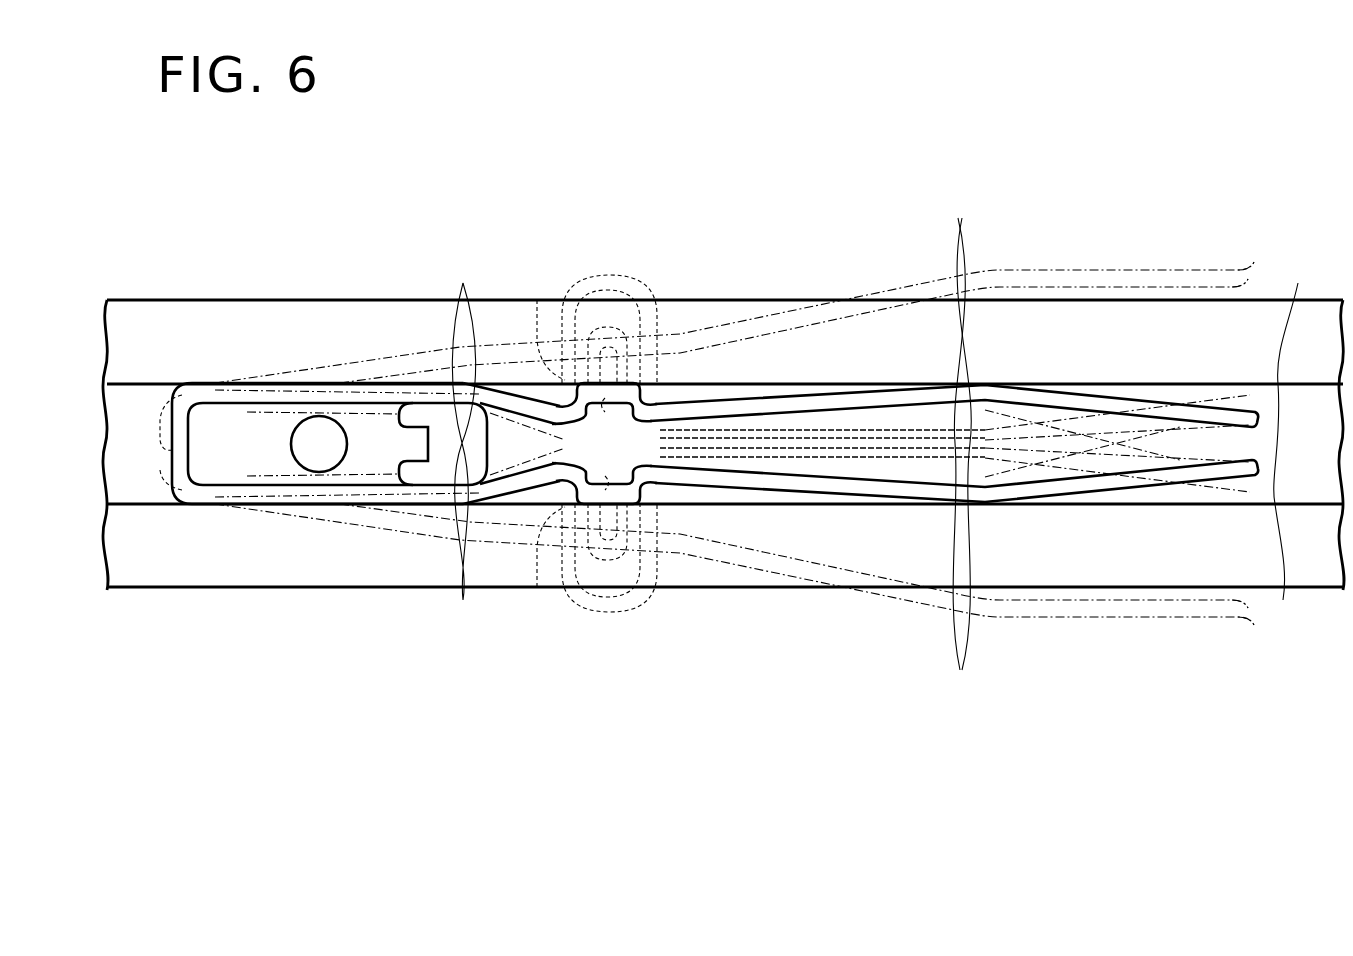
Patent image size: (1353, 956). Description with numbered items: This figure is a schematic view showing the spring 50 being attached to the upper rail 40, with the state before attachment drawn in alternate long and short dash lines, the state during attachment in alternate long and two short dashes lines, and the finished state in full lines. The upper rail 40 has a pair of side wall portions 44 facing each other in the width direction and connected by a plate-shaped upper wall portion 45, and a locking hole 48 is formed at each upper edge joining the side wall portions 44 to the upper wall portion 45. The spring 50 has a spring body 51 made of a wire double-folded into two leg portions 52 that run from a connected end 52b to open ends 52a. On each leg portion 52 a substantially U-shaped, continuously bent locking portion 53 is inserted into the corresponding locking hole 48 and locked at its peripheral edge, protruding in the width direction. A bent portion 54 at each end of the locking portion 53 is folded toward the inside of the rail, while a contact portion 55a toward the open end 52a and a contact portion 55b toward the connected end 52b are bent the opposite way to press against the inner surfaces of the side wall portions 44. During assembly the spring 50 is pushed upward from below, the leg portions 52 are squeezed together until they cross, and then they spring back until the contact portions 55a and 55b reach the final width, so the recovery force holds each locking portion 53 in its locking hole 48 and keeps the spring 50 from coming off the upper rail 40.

The upper rail 40 is at (161, 270).
The side wall portions 44 is at (104, 487).
The upper wall portion 45 is at (104, 443).
The locking hole 48 is at (607, 444).
The spring 50 is at (772, 208).
The spring body 51 is at (372, 600).
The leg portions 52 is at (1085, 600).
The open end 52a is at (1255, 262).
The connected end 52b is at (175, 440).
The locking portion 53 is at (600, 290).
The bent portion 54 is at (530, 600).
The contact portion 55a is at (962, 444).
The contact portion 55b is at (464, 443).